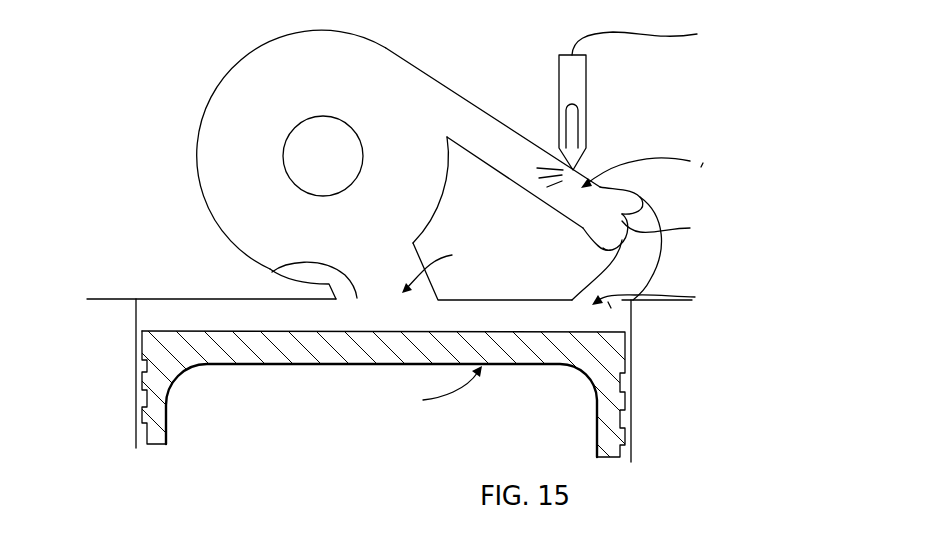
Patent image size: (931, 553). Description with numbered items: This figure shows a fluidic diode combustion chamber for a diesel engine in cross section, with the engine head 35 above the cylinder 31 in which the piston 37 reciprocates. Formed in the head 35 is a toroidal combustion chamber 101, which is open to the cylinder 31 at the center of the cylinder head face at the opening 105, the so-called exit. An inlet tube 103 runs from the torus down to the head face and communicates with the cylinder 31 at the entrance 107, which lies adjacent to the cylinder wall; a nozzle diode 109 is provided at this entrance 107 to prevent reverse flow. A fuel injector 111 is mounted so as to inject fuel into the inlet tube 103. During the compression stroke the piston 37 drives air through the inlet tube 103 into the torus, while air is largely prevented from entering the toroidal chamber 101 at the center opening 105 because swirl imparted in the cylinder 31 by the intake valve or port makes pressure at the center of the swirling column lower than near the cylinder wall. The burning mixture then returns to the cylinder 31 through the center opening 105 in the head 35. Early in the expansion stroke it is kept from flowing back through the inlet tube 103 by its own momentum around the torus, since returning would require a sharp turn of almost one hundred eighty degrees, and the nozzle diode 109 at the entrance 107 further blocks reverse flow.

The cylinder 31 is at (137, 321).
The head 35 is at (158, 242).
The piston 37 is at (151, 440).
The toroidal combustion chamber 101 is at (371, 37).
The inlet tube 103 is at (505, 121).
The opening at center of head face 105 is at (284, 270).
The entrance 107 is at (610, 306).
The nozzle diode 109 is at (628, 240).
The fuel injector 111 is at (587, 105).